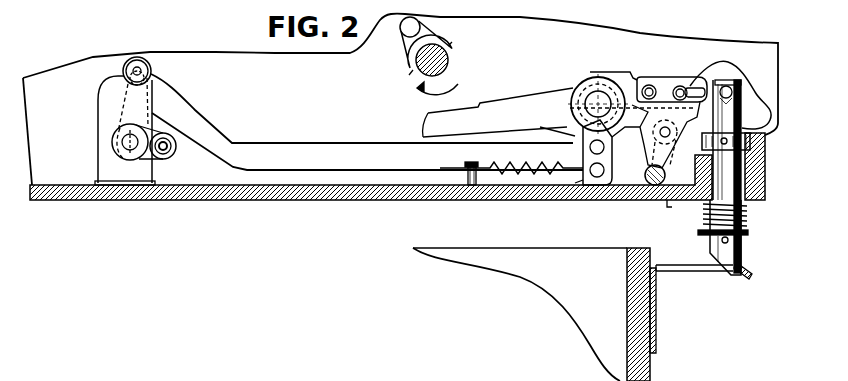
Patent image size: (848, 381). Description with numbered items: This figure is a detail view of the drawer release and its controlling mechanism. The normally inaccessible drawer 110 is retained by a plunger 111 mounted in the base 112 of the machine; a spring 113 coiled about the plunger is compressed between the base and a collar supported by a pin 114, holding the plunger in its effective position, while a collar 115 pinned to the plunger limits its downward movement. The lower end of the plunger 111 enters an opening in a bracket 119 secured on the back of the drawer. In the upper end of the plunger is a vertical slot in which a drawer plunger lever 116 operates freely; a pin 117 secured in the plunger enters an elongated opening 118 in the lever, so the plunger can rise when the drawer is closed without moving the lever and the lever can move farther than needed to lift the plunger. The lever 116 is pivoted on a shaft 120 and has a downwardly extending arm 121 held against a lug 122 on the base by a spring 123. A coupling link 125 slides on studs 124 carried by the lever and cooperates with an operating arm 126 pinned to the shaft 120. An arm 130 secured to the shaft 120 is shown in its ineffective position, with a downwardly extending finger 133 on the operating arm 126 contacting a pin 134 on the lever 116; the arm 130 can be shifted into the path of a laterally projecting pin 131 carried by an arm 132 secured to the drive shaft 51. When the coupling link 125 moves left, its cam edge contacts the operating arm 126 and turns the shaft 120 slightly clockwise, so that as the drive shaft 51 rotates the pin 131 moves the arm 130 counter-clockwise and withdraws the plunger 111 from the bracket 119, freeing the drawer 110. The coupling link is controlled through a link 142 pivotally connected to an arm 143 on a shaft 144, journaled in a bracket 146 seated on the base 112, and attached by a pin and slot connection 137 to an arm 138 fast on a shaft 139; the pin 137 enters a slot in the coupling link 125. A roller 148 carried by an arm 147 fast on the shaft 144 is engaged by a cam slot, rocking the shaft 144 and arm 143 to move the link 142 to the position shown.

The drive shaft 51 is at (449, 61).
The drawer 110 is at (541, 252).
The plunger 111 is at (725, 253).
The base 112 is at (645, 196).
The spring 113 is at (748, 219).
The pin 114 is at (741, 237).
The collar 115 is at (752, 142).
The drawer plunger lever 116 is at (742, 74).
The pin 117 is at (738, 100).
The elongated opening 118 is at (727, 80).
The bracket 119 is at (707, 265).
The shaft 120 is at (592, 100).
The arm 121 is at (582, 158).
The lug 122 is at (575, 185).
The spring 123 is at (503, 163).
The studs 124 is at (664, 79).
The coupling link 125 is at (651, 85).
The operating arm 126 is at (633, 75).
The arm 130 is at (518, 103).
The pin 131 is at (404, 35).
The arm 132 is at (407, 50).
The finger 133 is at (567, 132).
The pin 134 is at (605, 148).
The pin and slot connection 137 is at (672, 131).
The arm 138 is at (668, 210).
The shaft 139 is at (646, 173).
The link 142 is at (311, 146).
The arm 143 is at (125, 103).
The shaft 144 is at (122, 143).
The bracket 146 is at (102, 165).
The arm 147 is at (118, 135).
The roller 148 is at (164, 151).